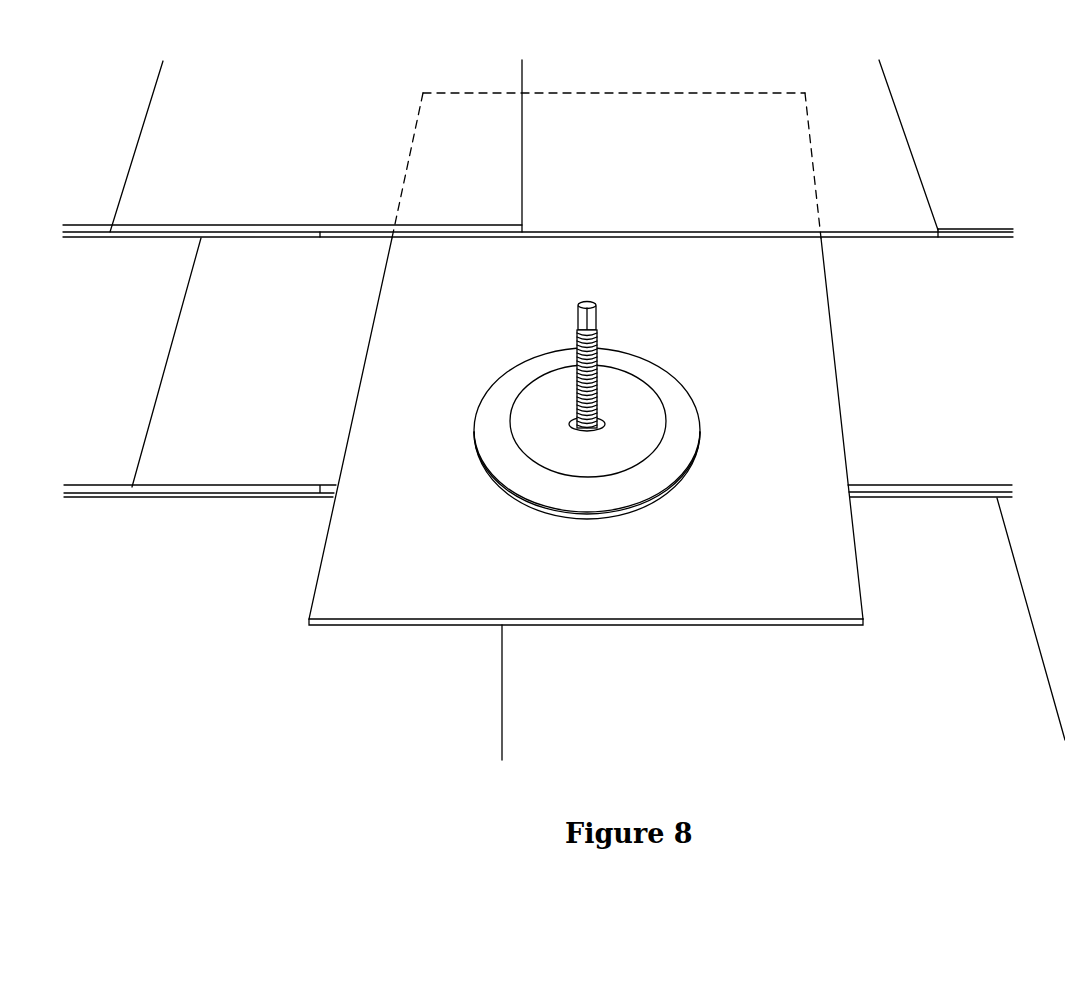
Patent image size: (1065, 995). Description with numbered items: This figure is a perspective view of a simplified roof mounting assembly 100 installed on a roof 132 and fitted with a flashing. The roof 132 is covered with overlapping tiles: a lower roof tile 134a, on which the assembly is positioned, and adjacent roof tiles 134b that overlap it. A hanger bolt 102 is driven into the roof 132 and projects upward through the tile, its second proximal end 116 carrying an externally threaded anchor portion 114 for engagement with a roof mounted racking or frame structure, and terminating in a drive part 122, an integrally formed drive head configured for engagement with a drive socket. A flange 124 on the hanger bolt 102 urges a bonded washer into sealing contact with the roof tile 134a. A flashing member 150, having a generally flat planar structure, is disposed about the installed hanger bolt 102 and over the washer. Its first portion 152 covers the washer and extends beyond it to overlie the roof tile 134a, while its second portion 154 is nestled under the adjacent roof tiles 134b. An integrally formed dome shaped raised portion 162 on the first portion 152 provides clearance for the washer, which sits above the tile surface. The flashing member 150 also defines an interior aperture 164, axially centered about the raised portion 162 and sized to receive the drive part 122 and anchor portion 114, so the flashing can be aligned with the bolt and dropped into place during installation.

The mounting assembly 100 is at (426, 427).
The hanger bolt 102 is at (597, 328).
The anchor portion 114 is at (598, 356).
The second proximal end 116 is at (566, 421).
The drive part 122 is at (591, 301).
The flange 124 is at (605, 422).
The roof 132 is at (963, 185).
The roof tile 134a is at (290, 373).
The roof tiles 134b is at (302, 161).
The flashing member 150 is at (470, 307).
The first portion 152 is at (815, 433).
The second portion 154 is at (747, 130).
The raised portion 162 is at (627, 447).
The interior aperture 164 is at (575, 427).